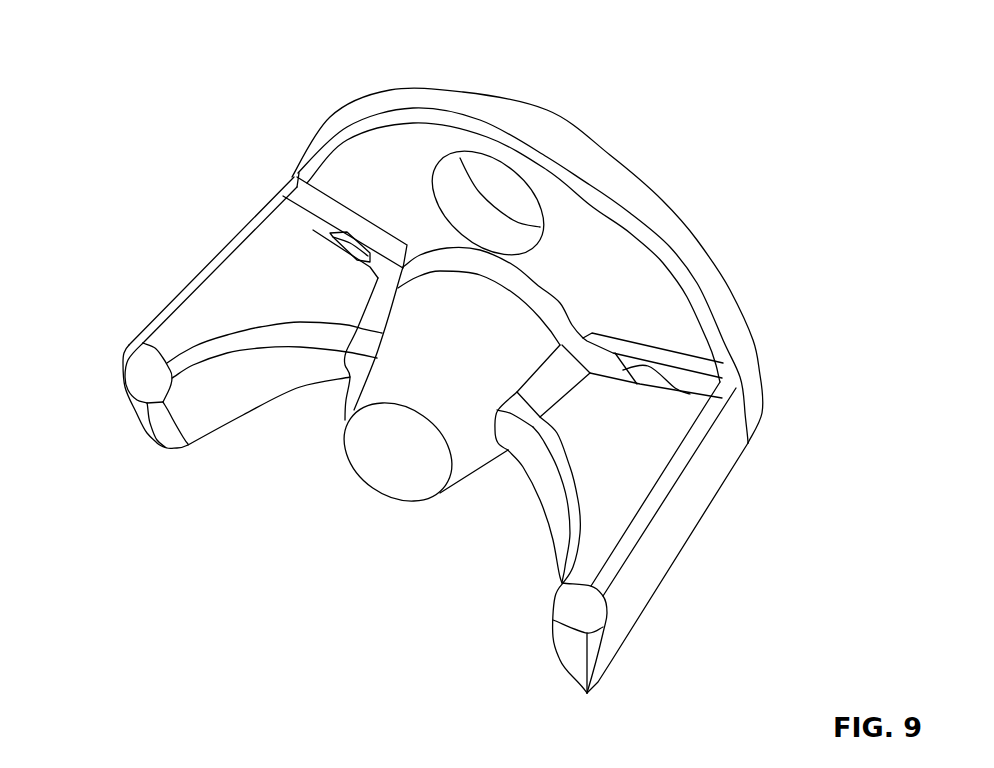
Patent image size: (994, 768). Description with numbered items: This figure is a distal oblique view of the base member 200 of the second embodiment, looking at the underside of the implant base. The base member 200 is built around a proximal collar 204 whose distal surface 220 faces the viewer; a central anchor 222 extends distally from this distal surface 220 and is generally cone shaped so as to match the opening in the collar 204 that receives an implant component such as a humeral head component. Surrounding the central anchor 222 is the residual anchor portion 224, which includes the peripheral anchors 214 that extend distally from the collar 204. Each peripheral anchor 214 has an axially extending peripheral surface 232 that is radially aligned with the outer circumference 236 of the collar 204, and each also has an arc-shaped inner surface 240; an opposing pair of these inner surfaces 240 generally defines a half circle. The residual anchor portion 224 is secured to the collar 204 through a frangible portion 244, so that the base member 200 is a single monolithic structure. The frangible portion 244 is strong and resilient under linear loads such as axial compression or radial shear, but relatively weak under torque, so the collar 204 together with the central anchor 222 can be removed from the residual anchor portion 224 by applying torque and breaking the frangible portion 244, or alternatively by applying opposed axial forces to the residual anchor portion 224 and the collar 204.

The base member 200 is at (131, 58).
The proximal collar 204 is at (455, 88).
The peripheral anchors 214 is at (613, 660).
The distal surface 220 is at (594, 238).
The central anchor 222 is at (380, 500).
The residual anchor portion 224 is at (657, 420).
The axially extending peripheral surface 232 is at (680, 523).
The outer circumference 236 is at (687, 242).
The arc-shaped inner surface 240 is at (233, 403).
The frangible portion 244 is at (397, 263).